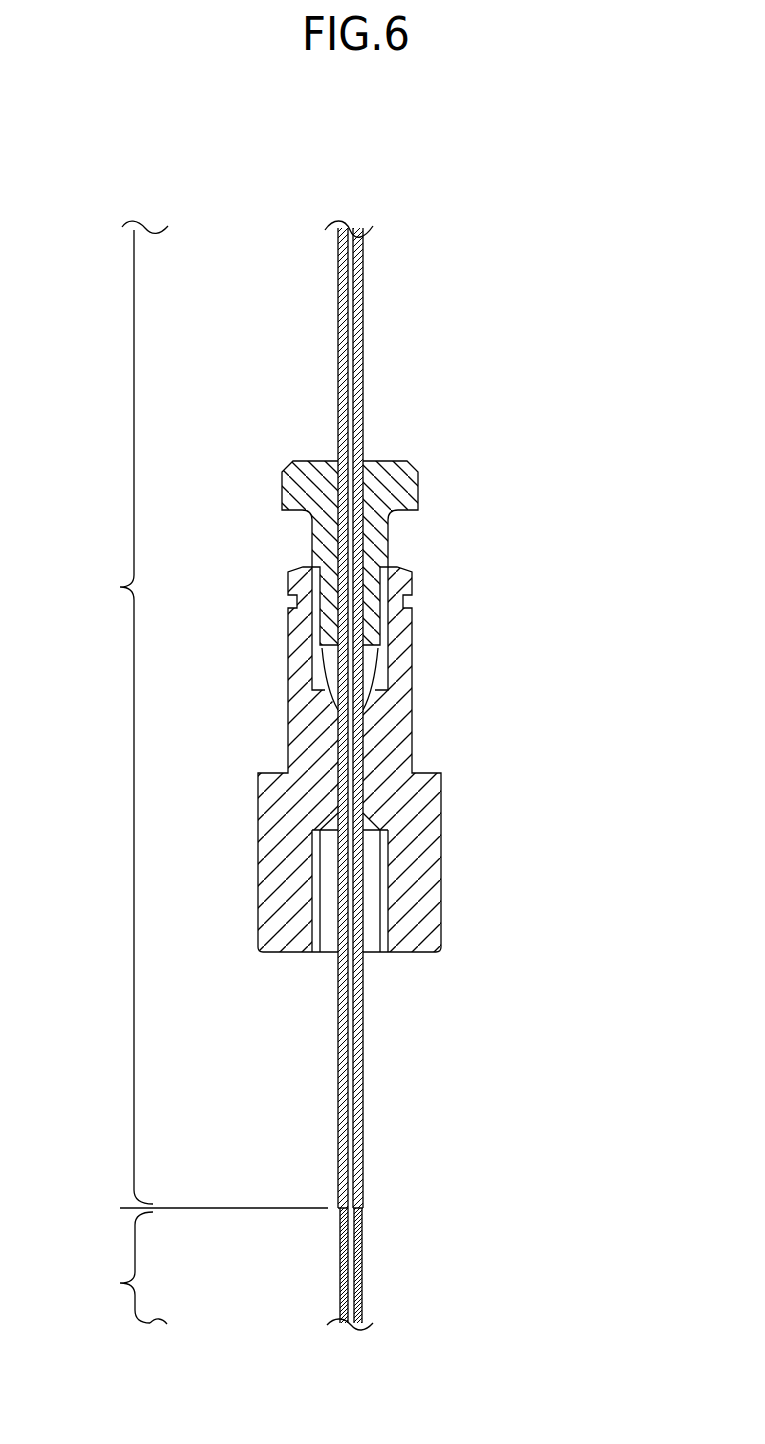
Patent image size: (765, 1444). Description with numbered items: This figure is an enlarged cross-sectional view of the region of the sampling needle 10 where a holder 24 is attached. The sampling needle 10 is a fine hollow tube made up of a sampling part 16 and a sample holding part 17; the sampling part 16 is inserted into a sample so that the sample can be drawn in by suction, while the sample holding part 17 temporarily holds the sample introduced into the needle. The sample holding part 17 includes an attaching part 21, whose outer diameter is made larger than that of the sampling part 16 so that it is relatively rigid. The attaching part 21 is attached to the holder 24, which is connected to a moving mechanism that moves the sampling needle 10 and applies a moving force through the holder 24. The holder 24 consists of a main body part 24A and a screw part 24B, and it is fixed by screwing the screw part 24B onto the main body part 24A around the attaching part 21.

The sampling needle 10 is at (412, 276).
The sampling part 16 is at (227, 1269).
The sample holding part 17 is at (125, 712).
The attaching part 21 is at (363, 1050).
The holder 24 is at (441, 610).
The main body part 24A is at (430, 816).
The screw part 24B is at (418, 477).